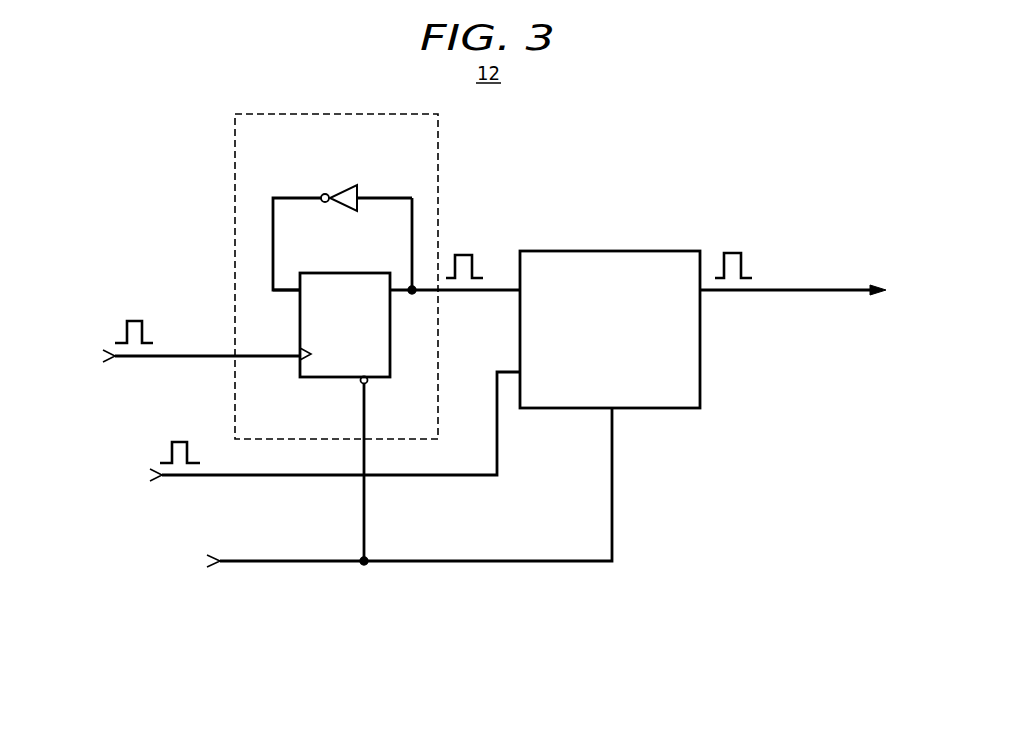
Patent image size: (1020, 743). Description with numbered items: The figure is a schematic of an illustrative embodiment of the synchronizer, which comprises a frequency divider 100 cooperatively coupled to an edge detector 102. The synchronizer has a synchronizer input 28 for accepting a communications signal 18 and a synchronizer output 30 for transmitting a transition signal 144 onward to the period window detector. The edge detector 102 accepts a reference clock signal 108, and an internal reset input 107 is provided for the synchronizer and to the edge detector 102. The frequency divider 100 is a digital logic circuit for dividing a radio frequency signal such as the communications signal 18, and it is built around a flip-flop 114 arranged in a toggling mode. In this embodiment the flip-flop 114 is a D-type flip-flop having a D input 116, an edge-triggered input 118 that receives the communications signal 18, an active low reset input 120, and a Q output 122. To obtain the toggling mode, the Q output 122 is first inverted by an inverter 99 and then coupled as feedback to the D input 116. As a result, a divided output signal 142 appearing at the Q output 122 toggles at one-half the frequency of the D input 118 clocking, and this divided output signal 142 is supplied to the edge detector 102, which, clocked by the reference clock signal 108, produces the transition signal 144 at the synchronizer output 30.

The communications signal 18 is at (135, 319).
The synchronizer input 28 is at (181, 353).
The synchronizer output 30 is at (734, 294).
The inverter 99 is at (366, 193).
The frequency divider 100 is at (232, 166).
The edge detector 102 is at (601, 250).
The internal reset input 107 is at (244, 564).
The reference clock signal 108 is at (181, 440).
The flip-flop 114 is at (335, 272).
The D input 116 is at (280, 293).
The edge-triggered input 118 is at (273, 359).
The active low reset input 120 is at (368, 384).
The Q output 122 is at (393, 296).
The divided output signal 142 is at (464, 252).
The transition signal 144 is at (734, 251).